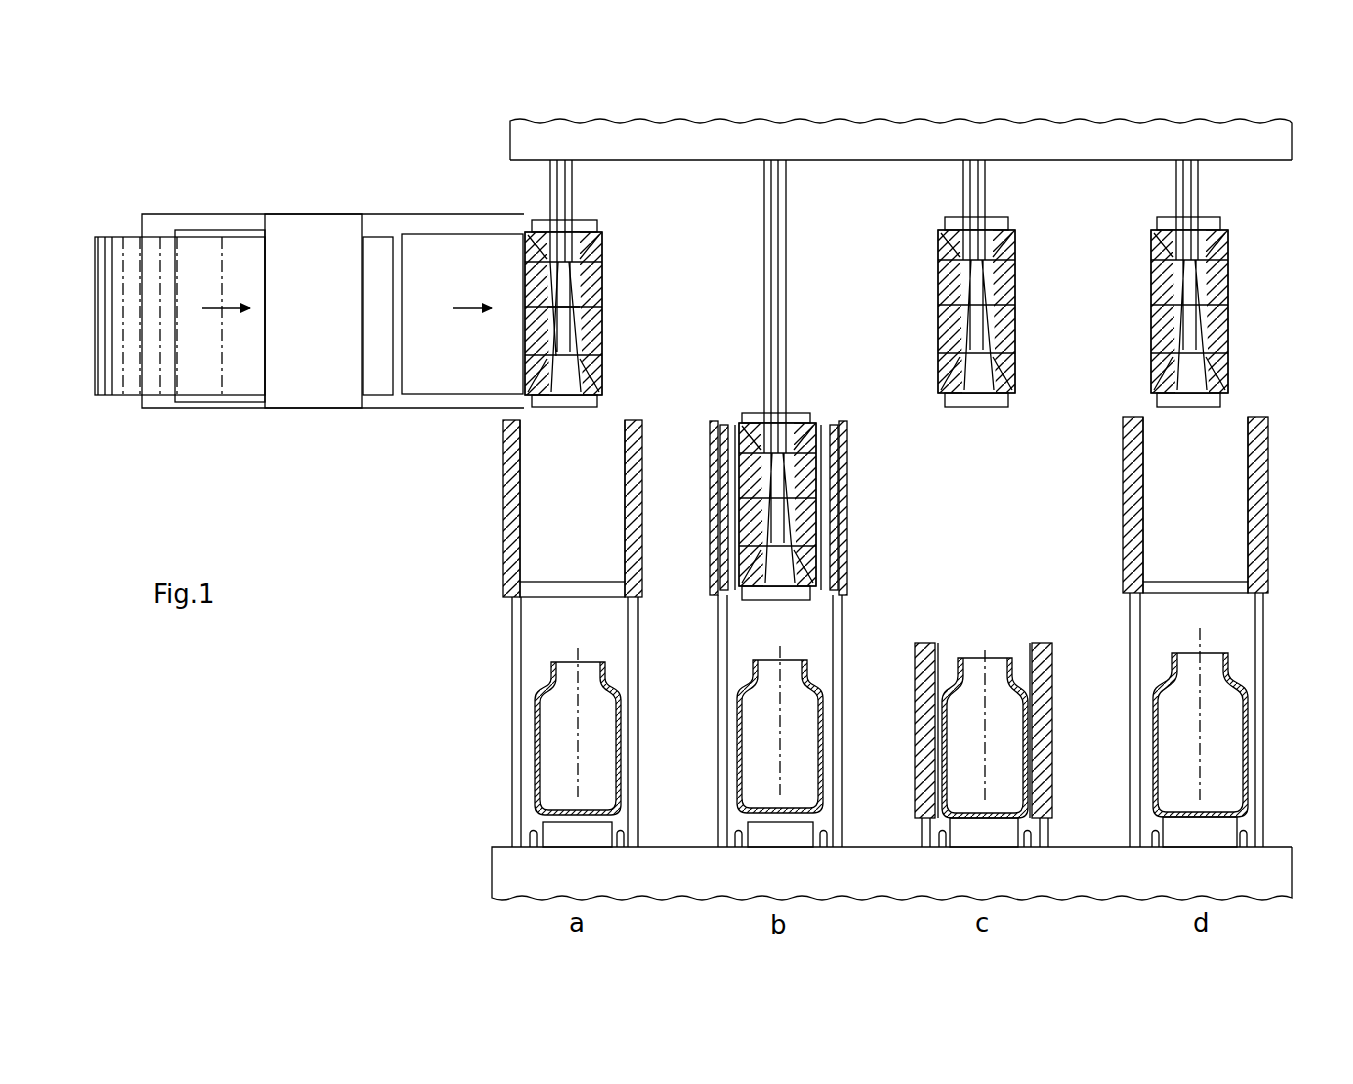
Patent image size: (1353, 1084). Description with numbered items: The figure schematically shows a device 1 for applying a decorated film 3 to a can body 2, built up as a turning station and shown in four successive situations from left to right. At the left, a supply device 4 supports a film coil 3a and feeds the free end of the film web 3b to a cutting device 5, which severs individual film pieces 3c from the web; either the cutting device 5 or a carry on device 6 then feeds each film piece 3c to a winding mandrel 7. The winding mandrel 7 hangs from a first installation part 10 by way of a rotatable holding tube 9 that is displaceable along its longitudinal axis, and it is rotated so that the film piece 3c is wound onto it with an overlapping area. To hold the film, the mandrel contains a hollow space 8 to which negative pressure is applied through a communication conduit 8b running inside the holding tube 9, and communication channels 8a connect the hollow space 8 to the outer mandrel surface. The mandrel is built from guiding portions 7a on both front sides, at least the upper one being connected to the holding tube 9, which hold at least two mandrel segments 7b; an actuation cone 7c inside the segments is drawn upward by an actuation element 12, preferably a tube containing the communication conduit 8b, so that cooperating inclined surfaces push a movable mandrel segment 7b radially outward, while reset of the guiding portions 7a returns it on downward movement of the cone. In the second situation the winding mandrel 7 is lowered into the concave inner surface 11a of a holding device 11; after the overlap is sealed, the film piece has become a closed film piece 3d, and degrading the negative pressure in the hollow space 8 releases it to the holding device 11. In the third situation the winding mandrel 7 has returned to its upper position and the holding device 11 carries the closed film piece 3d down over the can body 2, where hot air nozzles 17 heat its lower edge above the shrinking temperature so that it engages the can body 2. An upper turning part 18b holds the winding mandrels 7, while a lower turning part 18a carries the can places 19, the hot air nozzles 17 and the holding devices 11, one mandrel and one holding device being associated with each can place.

The device 1 is at (410, 150).
The can body 2 is at (538, 675).
The decorated film 3 is at (1255, 703).
The film coil 3a is at (123, 397).
The film web 3b is at (237, 402).
The film piece 3c is at (437, 402).
The closed film piece 3d is at (942, 658).
The supply device 4 is at (187, 213).
The cutting device 5 is at (308, 212).
The carry on device 6 is at (463, 212).
The winding mandrel 7 is at (602, 218).
The guiding portions 7a is at (808, 403).
The mandrel segments 7b is at (740, 482).
The actuation cone 7c is at (773, 567).
The hollow space 8 is at (582, 300).
The communication channels 8a is at (605, 330).
The communication conduit 8b is at (563, 157).
The holding tube 9 is at (548, 183).
The first installation part 10 is at (693, 165).
The holding device 11 is at (505, 525).
The concave inner surface 11a is at (622, 493).
The actuation element 12 is at (790, 327).
The hot air nozzles 17 is at (940, 848).
The lower turning part 18a is at (488, 863).
The upper turning part 18b is at (887, 127).
The can places 19 is at (785, 852).